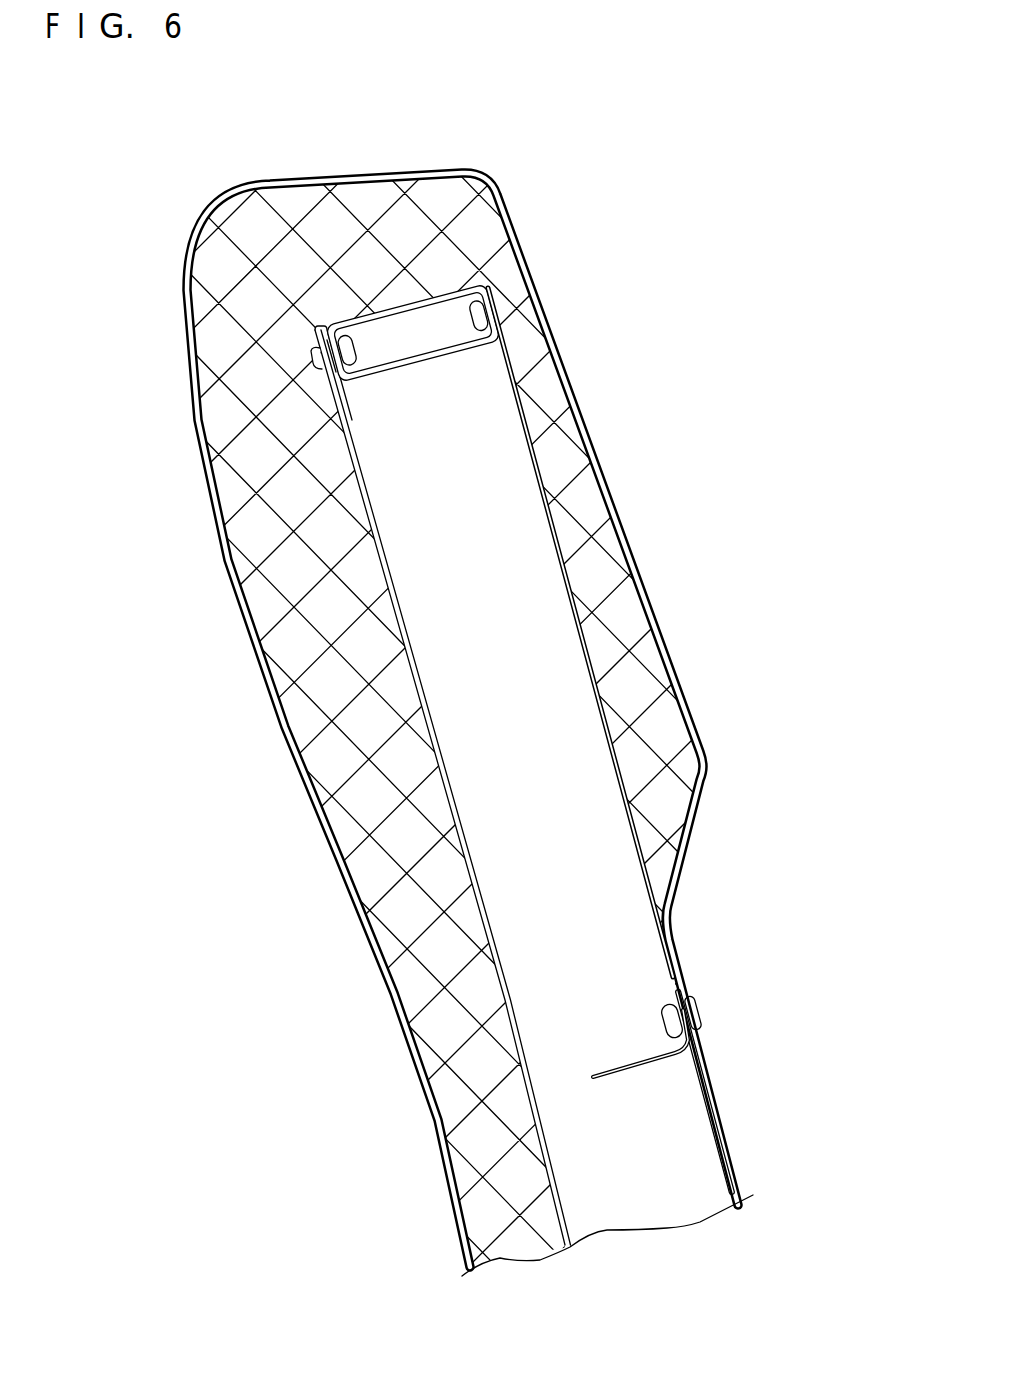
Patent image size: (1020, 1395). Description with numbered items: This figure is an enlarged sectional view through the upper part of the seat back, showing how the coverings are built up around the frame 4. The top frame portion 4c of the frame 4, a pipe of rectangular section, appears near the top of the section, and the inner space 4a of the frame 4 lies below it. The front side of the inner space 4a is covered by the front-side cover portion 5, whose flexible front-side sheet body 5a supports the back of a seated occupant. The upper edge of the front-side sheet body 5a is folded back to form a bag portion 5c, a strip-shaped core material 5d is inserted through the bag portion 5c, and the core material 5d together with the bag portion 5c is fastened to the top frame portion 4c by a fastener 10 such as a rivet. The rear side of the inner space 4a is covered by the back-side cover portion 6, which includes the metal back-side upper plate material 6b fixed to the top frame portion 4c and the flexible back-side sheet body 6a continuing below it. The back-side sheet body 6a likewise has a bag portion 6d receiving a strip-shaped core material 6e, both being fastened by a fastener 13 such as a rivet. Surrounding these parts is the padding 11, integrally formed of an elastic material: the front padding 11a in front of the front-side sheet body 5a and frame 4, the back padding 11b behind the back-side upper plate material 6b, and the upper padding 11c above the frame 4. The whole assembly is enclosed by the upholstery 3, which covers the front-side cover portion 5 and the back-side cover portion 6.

The upholstery 3 is at (568, 366).
The frame 4 is at (438, 777).
The inner space 4a is at (641, 1170).
The top frame portion 4c is at (420, 365).
The front-side cover portion 5 is at (339, 785).
The front-side sheet body 5a is at (485, 905).
The bag portion 5c is at (322, 423).
The core material 5d is at (320, 380).
The back-side cover portion 6 is at (642, 746).
The back-side sheet body 6a is at (725, 1178).
The back-side upper plate material 6b is at (600, 718).
The bag portion 6d is at (702, 1058).
The core material 6e is at (680, 990).
The fastener 10 is at (312, 360).
The padding 11 is at (510, 697).
The front padding 11a is at (365, 882).
The back padding 11b is at (625, 605).
The upper padding 11c is at (365, 195).
The fastener 13 is at (700, 1013).